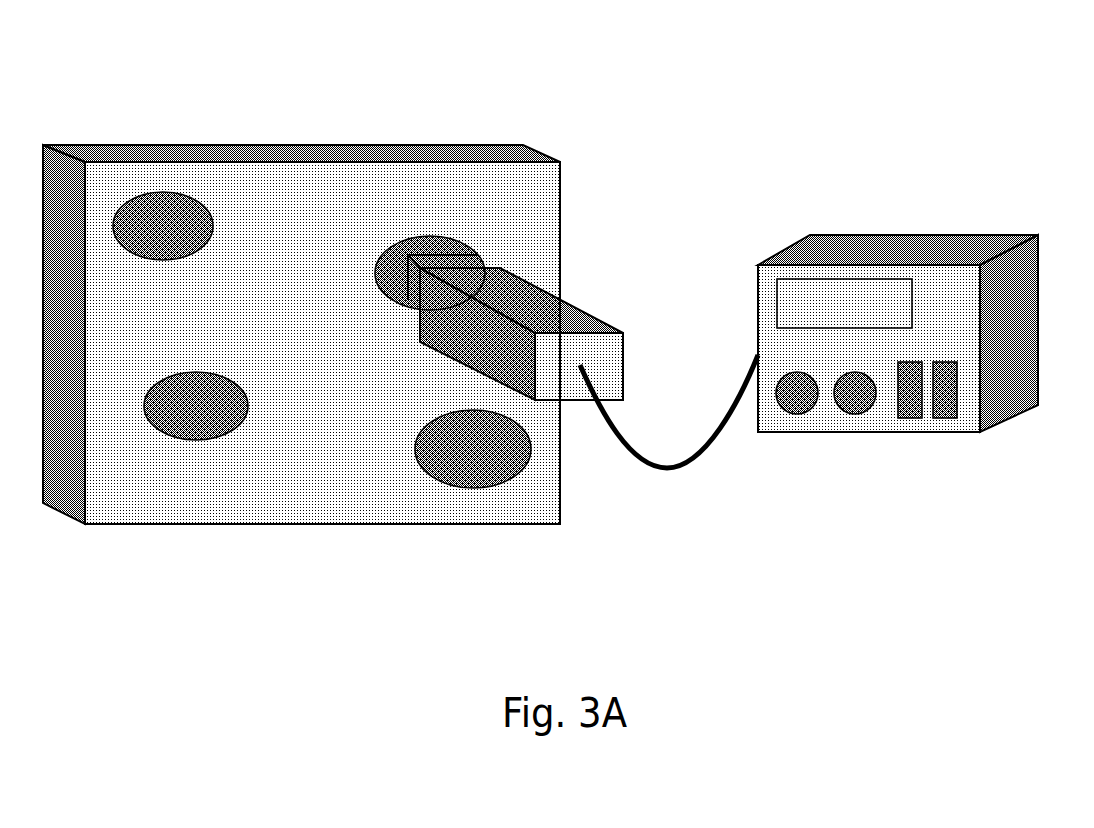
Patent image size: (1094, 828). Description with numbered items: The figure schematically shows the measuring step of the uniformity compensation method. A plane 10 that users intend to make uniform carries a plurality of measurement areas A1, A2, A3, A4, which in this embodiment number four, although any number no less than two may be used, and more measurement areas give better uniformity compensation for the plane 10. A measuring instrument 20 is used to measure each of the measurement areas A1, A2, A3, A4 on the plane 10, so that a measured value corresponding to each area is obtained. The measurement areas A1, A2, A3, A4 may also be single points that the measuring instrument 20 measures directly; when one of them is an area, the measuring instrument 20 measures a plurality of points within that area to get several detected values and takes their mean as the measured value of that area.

The plane 10 is at (344, 280).
The measuring instrument 20 is at (974, 202).
The measurement area A1 is at (179, 222).
The measurement area A2 is at (430, 259).
The measurement area A3 is at (200, 395).
The measurement area A4 is at (471, 439).